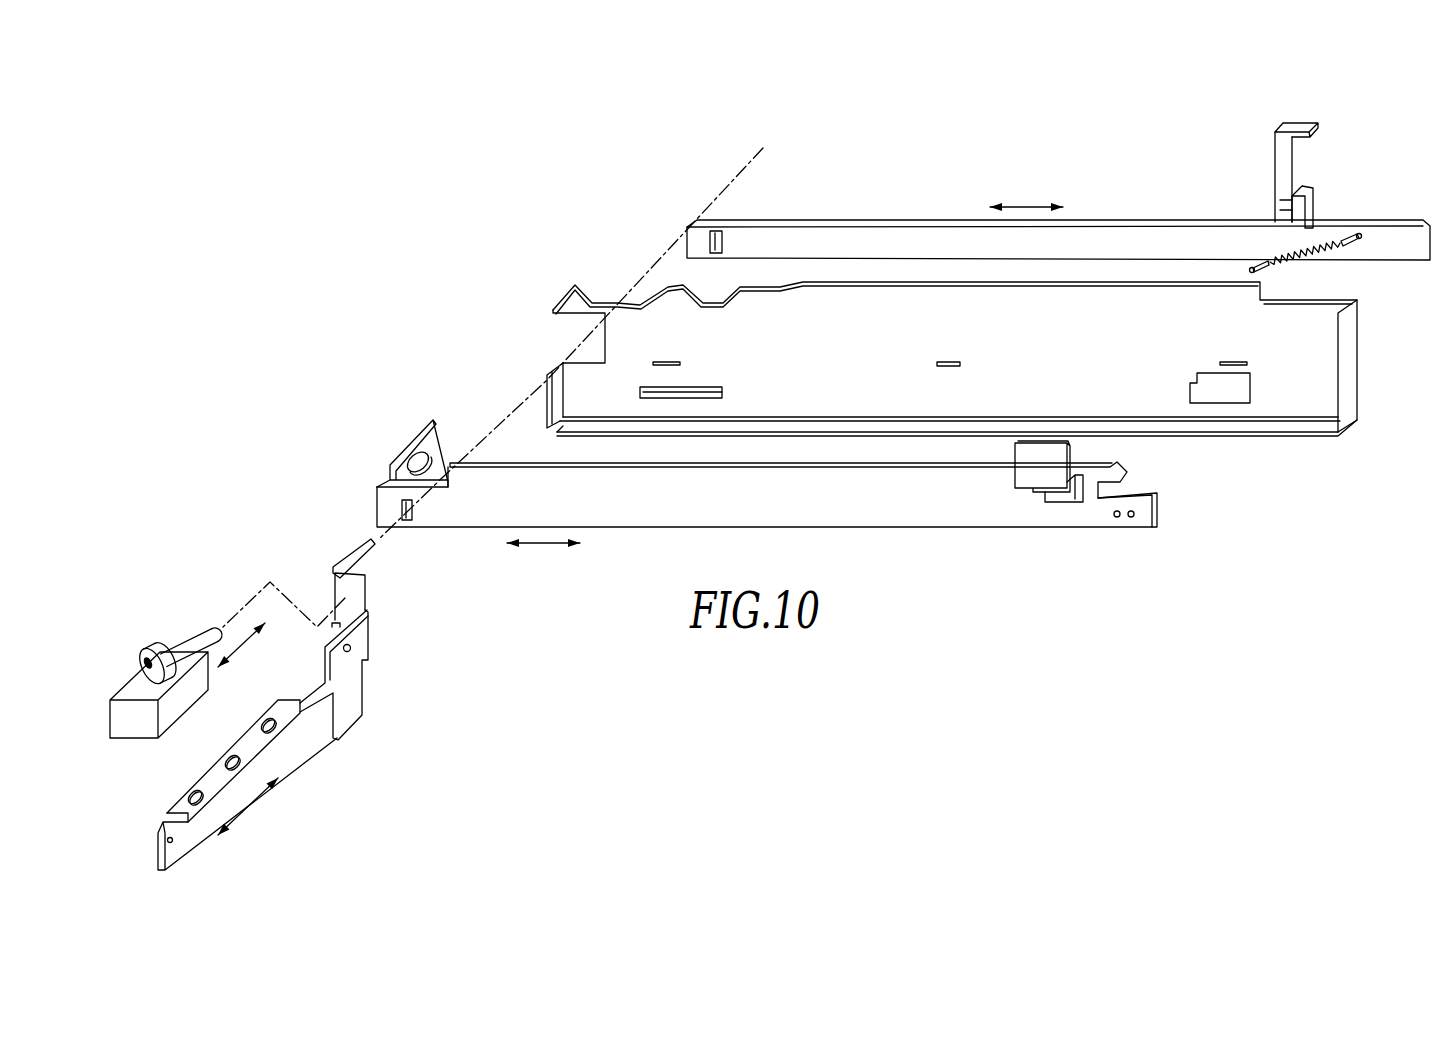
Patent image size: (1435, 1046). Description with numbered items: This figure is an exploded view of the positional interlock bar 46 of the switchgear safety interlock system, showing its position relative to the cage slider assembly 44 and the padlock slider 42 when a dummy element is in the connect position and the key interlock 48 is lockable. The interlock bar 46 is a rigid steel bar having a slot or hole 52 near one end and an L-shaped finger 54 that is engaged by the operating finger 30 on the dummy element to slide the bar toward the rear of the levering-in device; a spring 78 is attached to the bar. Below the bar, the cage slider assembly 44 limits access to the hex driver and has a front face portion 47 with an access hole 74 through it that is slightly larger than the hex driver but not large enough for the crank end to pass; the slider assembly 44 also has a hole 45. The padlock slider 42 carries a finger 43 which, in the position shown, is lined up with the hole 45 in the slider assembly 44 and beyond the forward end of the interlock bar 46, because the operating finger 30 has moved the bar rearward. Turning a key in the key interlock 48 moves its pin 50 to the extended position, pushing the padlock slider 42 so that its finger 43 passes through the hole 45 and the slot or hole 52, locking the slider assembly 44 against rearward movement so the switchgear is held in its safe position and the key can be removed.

The operating finger 30 is at (1272, 157).
The padlock slider 42 is at (289, 745).
The finger 43 is at (358, 543).
The cage slider assembly 44 is at (889, 528).
The hole 45 is at (412, 520).
The positional interlock bar 46 is at (850, 205).
The front face portion 47 is at (414, 423).
The key interlock 48 is at (126, 692).
The pin 50 is at (210, 636).
The slot or hole 52 is at (718, 230).
The L-shaped finger 54 is at (1316, 190).
The access hole 74 is at (432, 455).
The spring 78 is at (1326, 233).